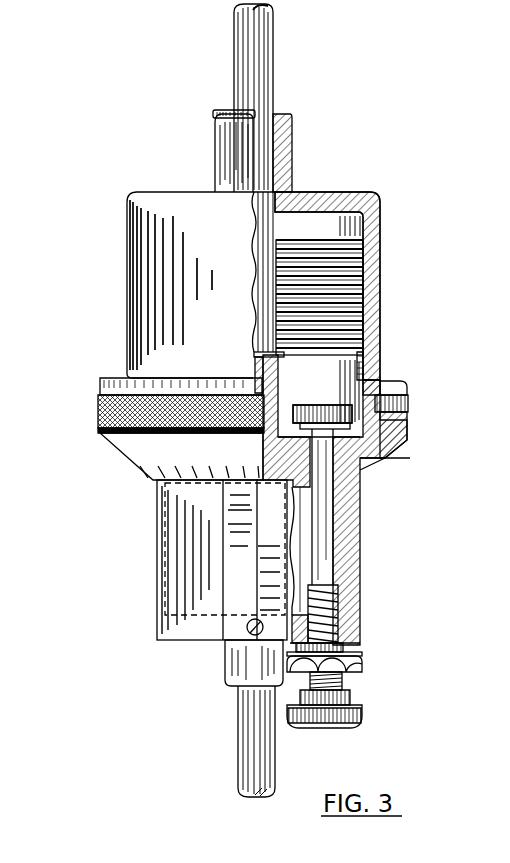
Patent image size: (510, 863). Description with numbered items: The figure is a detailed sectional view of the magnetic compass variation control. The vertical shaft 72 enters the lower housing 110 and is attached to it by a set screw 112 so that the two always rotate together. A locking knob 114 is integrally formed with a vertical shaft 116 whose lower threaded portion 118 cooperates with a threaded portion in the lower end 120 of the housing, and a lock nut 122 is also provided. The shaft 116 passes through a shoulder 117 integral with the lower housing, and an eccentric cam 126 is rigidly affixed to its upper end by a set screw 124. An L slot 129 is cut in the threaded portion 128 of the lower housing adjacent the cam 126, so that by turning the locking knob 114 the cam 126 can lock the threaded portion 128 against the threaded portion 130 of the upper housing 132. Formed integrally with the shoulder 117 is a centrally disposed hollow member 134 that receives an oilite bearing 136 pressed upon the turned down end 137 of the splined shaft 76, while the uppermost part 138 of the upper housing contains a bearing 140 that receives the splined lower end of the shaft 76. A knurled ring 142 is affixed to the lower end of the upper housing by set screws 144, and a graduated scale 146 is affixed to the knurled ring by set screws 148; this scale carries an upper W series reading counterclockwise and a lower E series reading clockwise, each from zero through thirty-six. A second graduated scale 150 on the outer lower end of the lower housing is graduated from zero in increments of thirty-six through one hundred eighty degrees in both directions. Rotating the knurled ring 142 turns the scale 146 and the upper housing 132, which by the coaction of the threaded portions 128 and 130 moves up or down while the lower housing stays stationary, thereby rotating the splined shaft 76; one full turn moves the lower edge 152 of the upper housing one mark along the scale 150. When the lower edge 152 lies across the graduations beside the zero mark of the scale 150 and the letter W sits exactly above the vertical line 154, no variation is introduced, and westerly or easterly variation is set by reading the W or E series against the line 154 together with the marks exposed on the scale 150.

The vertical shaft 72 is at (252, 720).
The shaft 76 is at (262, 52).
The lower housing 110 is at (172, 545).
The set screw 112 is at (250, 632).
The locking knob 114 is at (360, 712).
The vertical shaft 116 is at (325, 552).
The shoulder 117 is at (300, 500).
The lower threaded portion 118 is at (335, 600).
The lower end of the housing 120 is at (345, 628).
The lock nut 122 is at (352, 662).
The set screw 124 is at (310, 405).
The eccentric cam 126 is at (372, 385).
The threaded portion 128 is at (357, 372).
The L slot 129 is at (368, 466).
The threaded portion 130 is at (340, 270).
The upper housing 132 is at (380, 225).
The hollow member 134 is at (380, 352).
The oilite bearing 136 is at (262, 353).
The turned down end 137 is at (259, 375).
The uppermost part 138 is at (218, 138).
The bearing 140 is at (283, 118).
The knurled ring 142 is at (98, 408).
The set screws 144 is at (410, 398).
The graduated scale 146 is at (140, 462).
The set screws 148 is at (405, 446).
The second graduated scale 150 is at (225, 500).
The lower edge 152 is at (158, 486).
The vertical line 154 is at (248, 528).